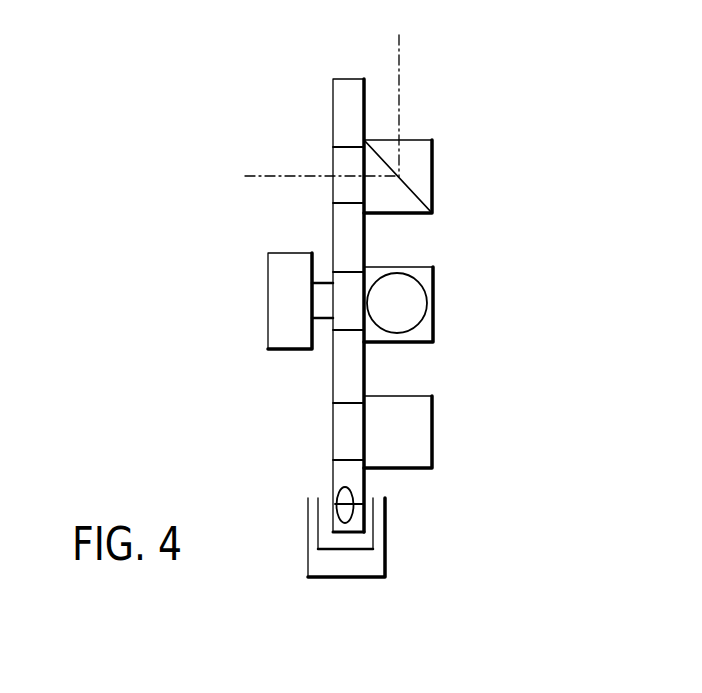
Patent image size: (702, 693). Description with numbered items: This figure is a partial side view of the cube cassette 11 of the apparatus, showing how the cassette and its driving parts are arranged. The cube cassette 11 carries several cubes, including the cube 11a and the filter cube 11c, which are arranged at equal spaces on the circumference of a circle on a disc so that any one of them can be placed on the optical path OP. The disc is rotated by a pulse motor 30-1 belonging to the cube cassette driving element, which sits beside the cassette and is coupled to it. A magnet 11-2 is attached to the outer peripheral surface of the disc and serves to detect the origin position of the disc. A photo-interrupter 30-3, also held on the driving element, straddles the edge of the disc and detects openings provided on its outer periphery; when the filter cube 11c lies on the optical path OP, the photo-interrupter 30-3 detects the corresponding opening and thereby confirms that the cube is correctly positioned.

The optical path OP is at (399, 55).
The cube cassette 11 is at (327, 103).
The cube 11a is at (432, 165).
The filter cube 11c is at (432, 430).
The pulse motor 30-1 is at (268, 349).
The magnet 11-2 is at (363, 488).
The photo-interrupter 30-3 is at (385, 557).